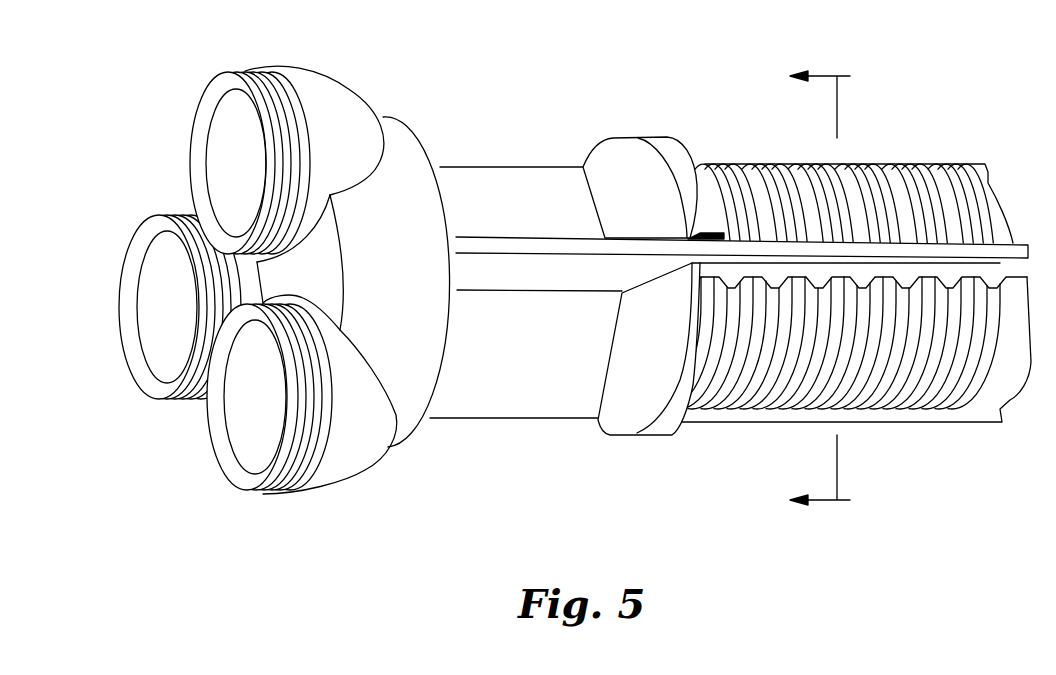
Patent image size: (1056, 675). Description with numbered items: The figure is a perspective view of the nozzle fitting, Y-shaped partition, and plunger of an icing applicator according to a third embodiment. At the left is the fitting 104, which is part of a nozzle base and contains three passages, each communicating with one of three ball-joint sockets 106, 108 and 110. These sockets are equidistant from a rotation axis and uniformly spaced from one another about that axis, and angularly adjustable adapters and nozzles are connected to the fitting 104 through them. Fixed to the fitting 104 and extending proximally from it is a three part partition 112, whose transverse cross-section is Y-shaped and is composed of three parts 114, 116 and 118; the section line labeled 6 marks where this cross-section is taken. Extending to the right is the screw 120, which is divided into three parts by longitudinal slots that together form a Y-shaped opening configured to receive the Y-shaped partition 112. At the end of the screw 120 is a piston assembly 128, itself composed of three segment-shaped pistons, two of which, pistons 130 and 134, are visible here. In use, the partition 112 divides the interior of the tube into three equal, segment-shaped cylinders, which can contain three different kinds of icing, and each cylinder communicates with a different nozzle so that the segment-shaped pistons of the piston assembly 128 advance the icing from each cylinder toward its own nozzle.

The fitting 104 is at (398, 157).
The ball-joint socket 106 is at (221, 148).
The ball-joint socket 108 is at (150, 291).
The ball-joint socket 110 is at (243, 436).
The three part partition 112 is at (721, 321).
The partition part 114 is at (490, 190).
The partition part 116 is at (495, 405).
The partition part 118 is at (503, 272).
The screw 120 is at (910, 436).
The piston assembly 128 is at (648, 244).
The segment-shaped piston 130 is at (640, 397).
The segment-shaped piston 134 is at (640, 173).
The section line 6- 6 is at (803, 290).